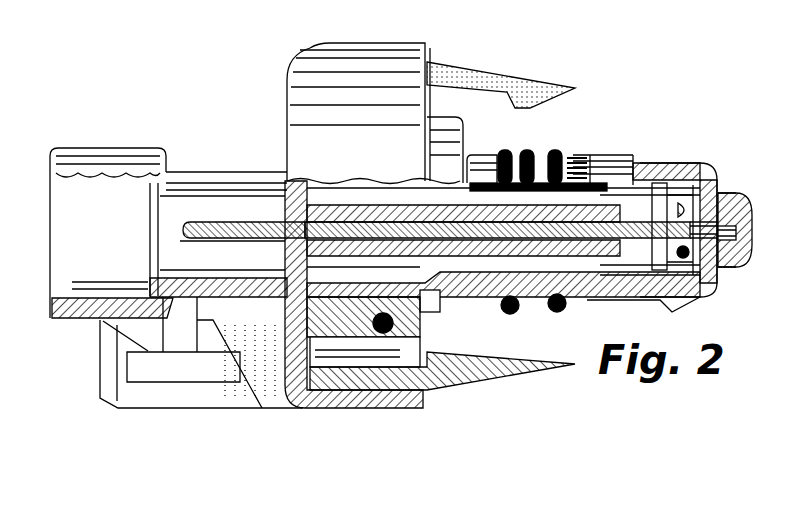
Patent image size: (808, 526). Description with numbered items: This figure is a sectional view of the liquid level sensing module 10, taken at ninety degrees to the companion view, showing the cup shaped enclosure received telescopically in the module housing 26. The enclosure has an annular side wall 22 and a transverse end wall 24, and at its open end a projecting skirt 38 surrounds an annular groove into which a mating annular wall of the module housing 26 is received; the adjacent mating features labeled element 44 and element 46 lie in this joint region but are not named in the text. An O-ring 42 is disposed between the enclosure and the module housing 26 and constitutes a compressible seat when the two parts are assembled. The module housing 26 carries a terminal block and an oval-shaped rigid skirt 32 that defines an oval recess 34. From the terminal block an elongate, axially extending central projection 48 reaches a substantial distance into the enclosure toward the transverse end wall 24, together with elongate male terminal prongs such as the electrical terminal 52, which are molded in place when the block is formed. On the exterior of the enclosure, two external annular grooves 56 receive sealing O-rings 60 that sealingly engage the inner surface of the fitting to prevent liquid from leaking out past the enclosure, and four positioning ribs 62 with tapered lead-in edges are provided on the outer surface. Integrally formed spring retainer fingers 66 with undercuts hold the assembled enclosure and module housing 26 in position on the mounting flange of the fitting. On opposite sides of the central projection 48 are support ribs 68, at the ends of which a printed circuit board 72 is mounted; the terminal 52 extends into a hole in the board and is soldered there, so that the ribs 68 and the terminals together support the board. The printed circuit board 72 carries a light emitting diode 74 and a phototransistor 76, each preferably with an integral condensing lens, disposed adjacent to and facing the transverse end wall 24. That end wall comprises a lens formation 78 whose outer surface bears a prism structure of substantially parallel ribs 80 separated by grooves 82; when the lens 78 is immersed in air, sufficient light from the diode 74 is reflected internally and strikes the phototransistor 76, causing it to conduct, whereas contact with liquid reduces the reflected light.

The module 10 is at (658, 92).
The annular side wall 22 is at (664, 298).
The transverse end wall 24 is at (718, 175).
The module housing 26 is at (250, 146).
The oval-shaped rigid skirt 32 is at (33, 328).
The oval recess 34 is at (68, 225).
The projecting skirt 38 is at (358, 94).
The O-ring 42 is at (382, 337).
The cap top wall 44 is at (394, 0).
The retainer block 46 is at (404, 91).
The central projection 48 is at (607, 222).
The electrical terminal 52 is at (226, 222).
The external annular grooves 56 is at (523, 150).
The sealing O-rings 60 is at (503, 150).
The positioning ribs 62 is at (666, 162).
The spring retainer fingers 66 is at (492, 77).
The support ribs 68 is at (366, 203).
The printed circuit board 72 is at (684, 165).
The light emitting diode 74 is at (700, 285).
The phototransistor 76 is at (694, 170).
The lens formation 78 is at (738, 262).
The ribs or ridges 80 is at (750, 204).
The grooves 82 is at (754, 218).